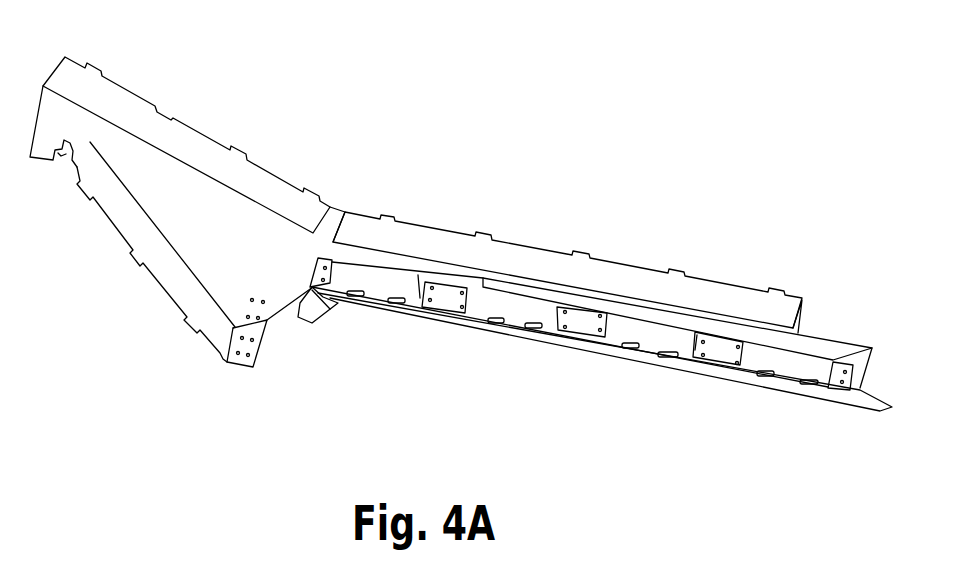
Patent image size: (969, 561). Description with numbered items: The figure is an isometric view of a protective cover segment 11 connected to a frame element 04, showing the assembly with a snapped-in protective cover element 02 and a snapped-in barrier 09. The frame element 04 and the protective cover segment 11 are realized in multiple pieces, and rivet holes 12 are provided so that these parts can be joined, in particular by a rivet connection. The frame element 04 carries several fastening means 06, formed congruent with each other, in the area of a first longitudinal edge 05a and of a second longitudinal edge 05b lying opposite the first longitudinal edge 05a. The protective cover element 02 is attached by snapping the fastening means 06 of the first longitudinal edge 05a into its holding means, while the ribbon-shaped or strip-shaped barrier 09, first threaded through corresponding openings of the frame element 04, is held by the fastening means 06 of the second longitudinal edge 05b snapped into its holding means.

The protective cover element 02 is at (120, 112).
The frame element 04 is at (197, 200).
The first longitudinal edge 05a is at (338, 208).
The second longitudinal edge 05b is at (230, 357).
The fastening means 06 is at (585, 250).
The barrier 09 is at (652, 335).
The protective cover segment 11 is at (442, 298).
The rivet holes 12 is at (467, 293).